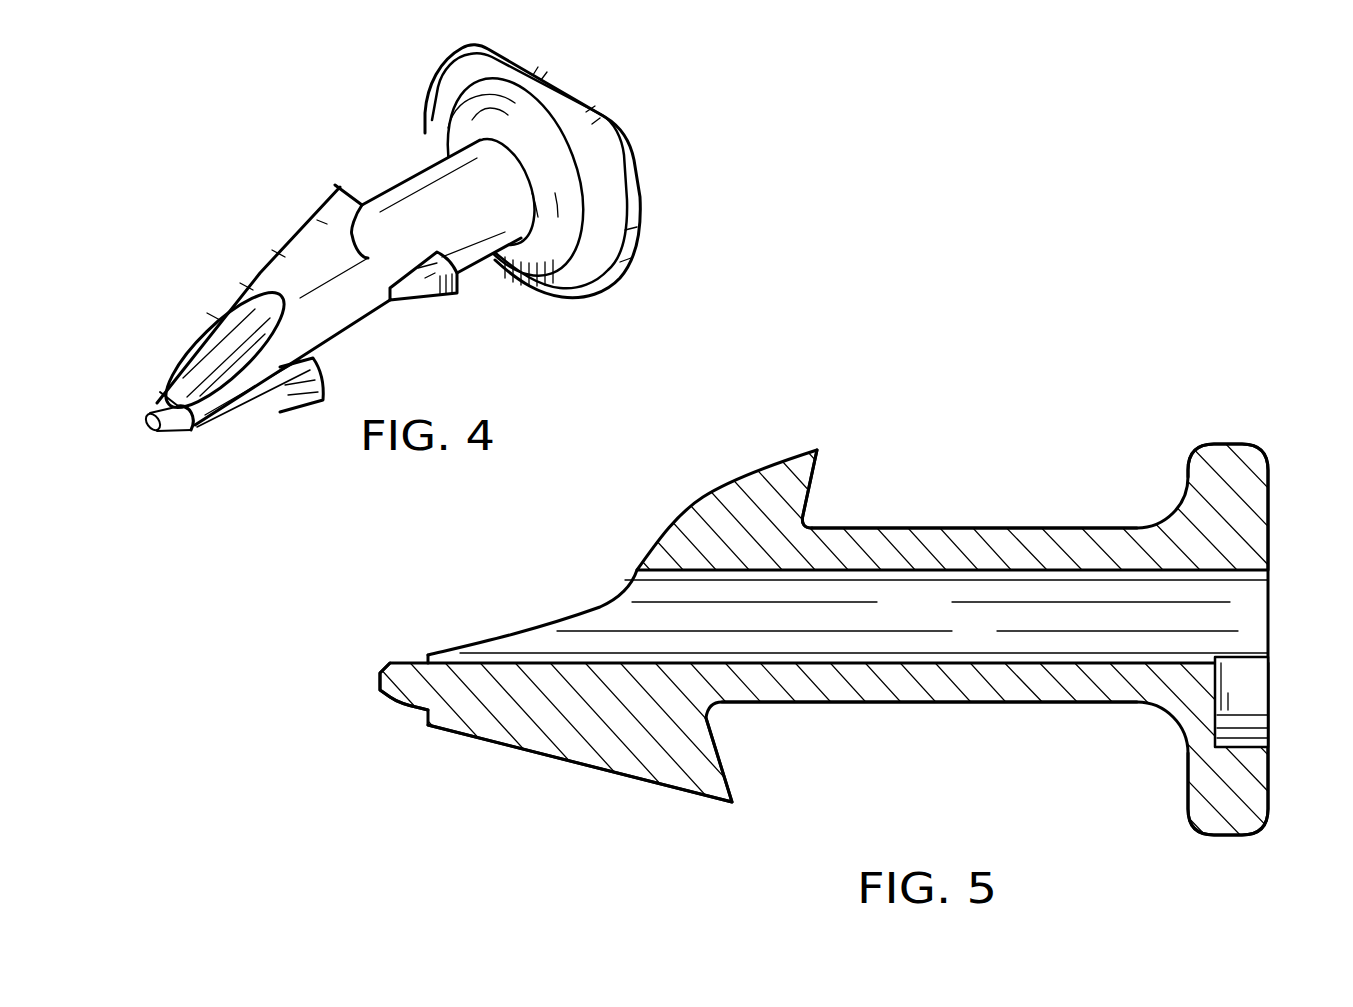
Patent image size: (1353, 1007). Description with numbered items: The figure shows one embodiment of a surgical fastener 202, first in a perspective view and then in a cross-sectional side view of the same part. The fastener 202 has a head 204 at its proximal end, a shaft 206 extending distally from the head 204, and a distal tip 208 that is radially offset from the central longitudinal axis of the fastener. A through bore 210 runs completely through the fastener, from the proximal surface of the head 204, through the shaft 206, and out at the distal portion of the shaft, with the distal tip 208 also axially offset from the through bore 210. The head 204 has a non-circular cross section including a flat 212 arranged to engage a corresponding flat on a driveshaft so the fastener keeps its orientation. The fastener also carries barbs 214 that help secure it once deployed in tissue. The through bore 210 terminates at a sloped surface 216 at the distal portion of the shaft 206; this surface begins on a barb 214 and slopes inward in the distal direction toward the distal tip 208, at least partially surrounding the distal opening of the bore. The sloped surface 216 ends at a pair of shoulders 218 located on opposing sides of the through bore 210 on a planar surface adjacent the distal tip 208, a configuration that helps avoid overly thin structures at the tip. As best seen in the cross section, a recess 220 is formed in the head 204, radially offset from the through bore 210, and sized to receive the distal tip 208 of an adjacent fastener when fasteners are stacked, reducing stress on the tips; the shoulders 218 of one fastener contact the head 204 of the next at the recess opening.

In FIG. 4, the fastener 202 is at (274, 180).
In FIG. 5, the fastener 202 is at (713, 488).
In FIG. 4, the head 204 is at (627, 152).
In FIG. 5, the head 204 is at (1270, 498).
In FIG. 4, the shaft 206 is at (400, 187).
In FIG. 5, the shaft 206 is at (1008, 527).
In FIG. 4, the distal tip 208 is at (150, 426).
In FIG. 5, the distal tip 208 is at (381, 692).
In FIG. 4, the through bore 210 is at (218, 345).
In FIG. 5, the through bore 210 is at (604, 617).
In FIG. 4, the flat 212 is at (557, 92).
In FIG. 4, the barb 214 is at (337, 245).
In FIG. 5, the barb 214 is at (812, 481).
In FIG. 4, the sloped surface 216 is at (268, 278).
In FIG. 5, the sloped surface 216 is at (650, 552).
In FIG. 4, the shoulder 218 is at (160, 392).
In FIG. 5, the shoulder 218 is at (424, 652).
In FIG. 5, the recess 220 is at (1270, 702).